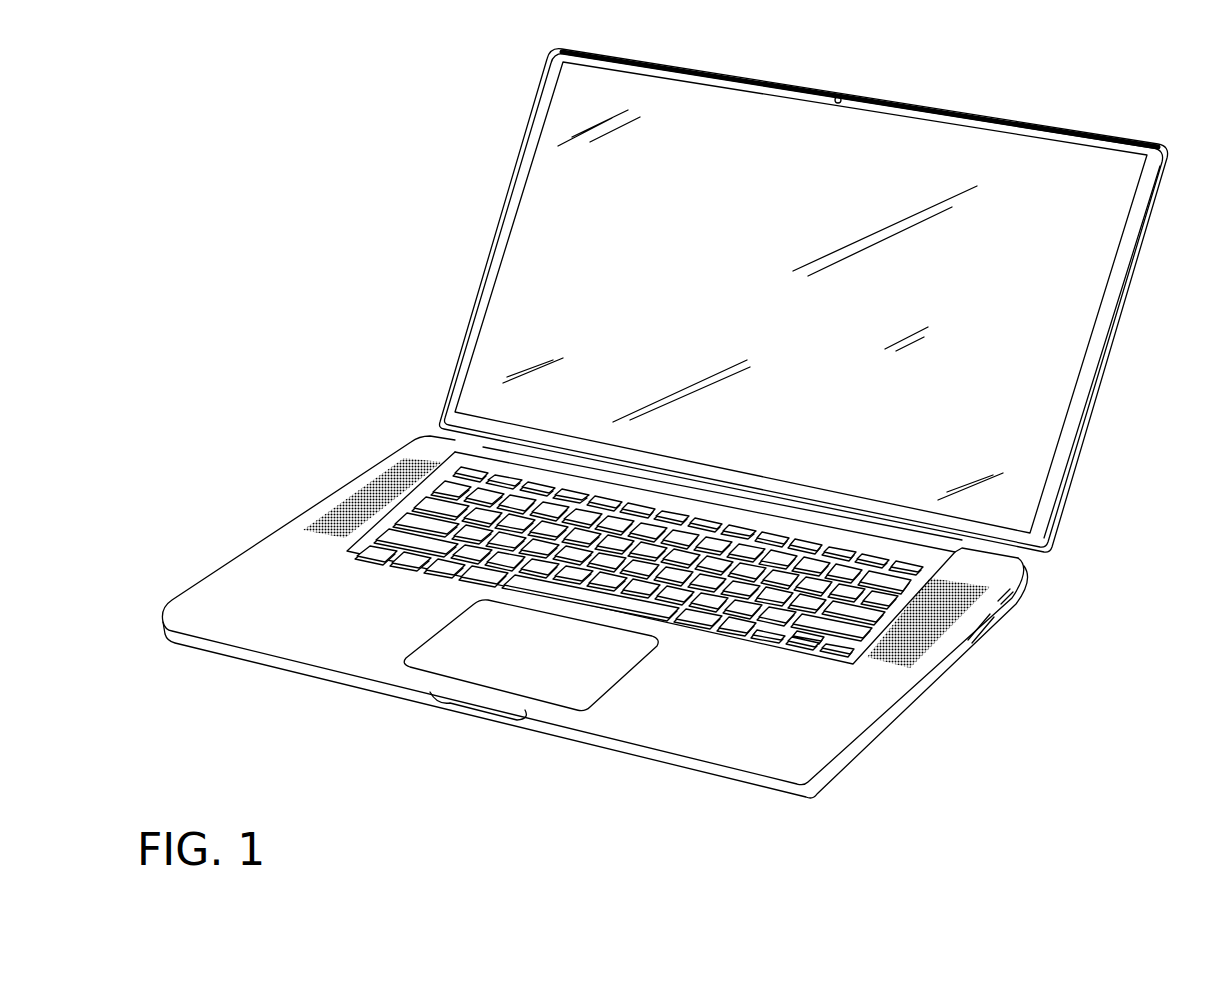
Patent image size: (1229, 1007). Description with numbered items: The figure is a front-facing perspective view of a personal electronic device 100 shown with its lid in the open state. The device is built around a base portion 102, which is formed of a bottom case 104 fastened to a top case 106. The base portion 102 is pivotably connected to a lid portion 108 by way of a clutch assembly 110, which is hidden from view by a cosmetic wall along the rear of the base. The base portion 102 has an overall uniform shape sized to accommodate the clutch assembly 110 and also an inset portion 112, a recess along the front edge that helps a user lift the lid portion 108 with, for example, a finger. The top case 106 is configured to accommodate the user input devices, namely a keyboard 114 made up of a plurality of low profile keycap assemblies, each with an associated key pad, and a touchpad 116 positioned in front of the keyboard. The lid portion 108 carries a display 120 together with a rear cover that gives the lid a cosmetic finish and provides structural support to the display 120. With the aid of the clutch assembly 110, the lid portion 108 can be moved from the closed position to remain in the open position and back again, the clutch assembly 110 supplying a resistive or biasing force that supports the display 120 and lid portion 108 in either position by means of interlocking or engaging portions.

The personal electronic device 100 is at (688, 423).
The base portion 102 is at (946, 707).
The bottom case 104 is at (884, 766).
The top case 106 is at (355, 615).
The lid portion 108 is at (804, 300).
The clutch assembly 110 is at (507, 443).
The inset portion 112 is at (458, 717).
The keyboard 114 is at (457, 483).
The touchpad 116 is at (556, 656).
The display 120 is at (791, 302).